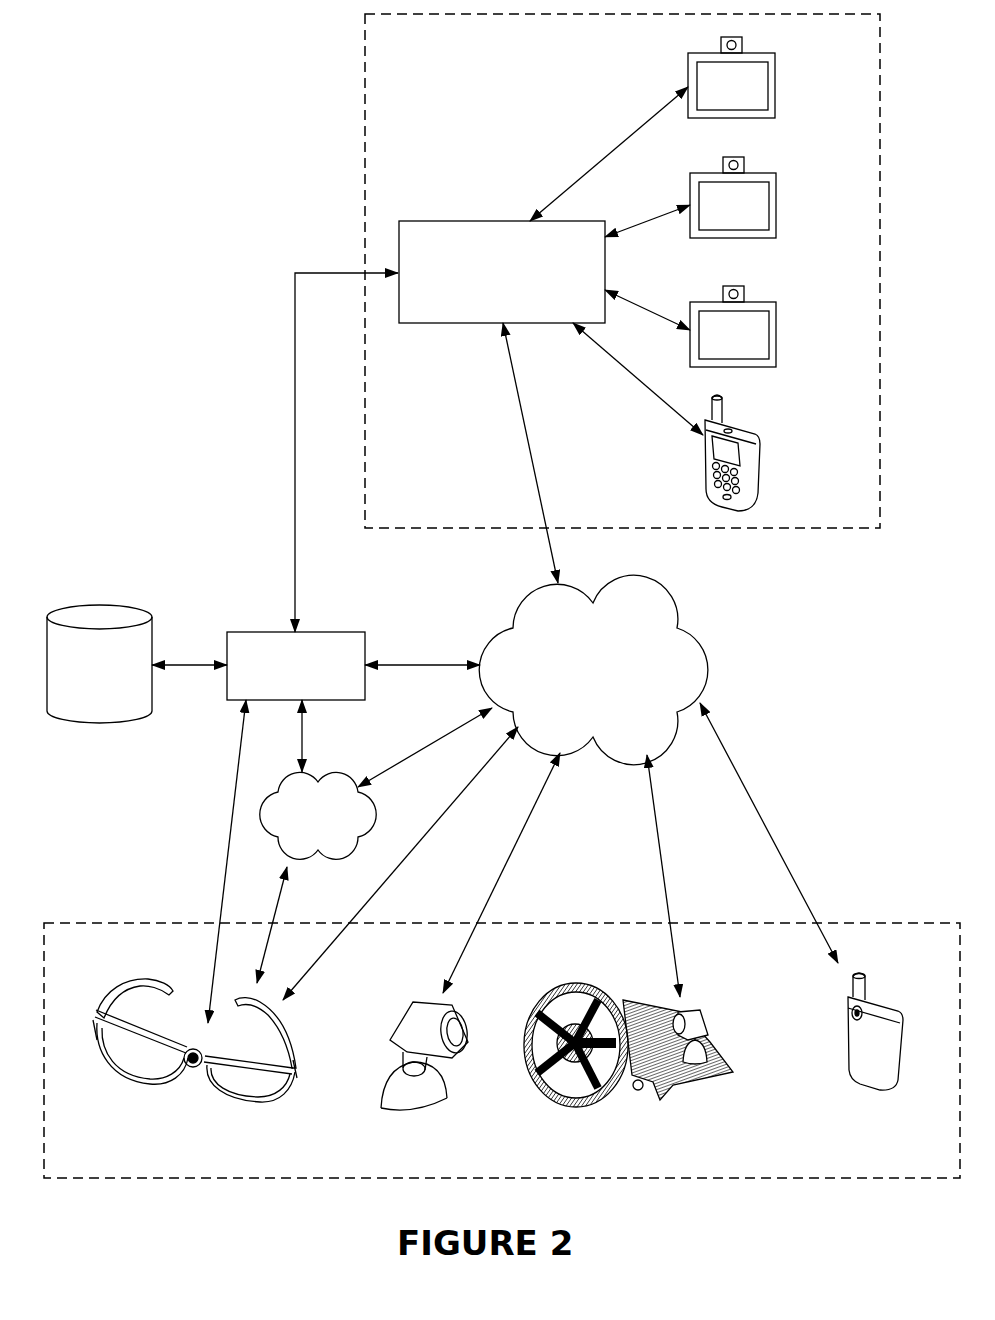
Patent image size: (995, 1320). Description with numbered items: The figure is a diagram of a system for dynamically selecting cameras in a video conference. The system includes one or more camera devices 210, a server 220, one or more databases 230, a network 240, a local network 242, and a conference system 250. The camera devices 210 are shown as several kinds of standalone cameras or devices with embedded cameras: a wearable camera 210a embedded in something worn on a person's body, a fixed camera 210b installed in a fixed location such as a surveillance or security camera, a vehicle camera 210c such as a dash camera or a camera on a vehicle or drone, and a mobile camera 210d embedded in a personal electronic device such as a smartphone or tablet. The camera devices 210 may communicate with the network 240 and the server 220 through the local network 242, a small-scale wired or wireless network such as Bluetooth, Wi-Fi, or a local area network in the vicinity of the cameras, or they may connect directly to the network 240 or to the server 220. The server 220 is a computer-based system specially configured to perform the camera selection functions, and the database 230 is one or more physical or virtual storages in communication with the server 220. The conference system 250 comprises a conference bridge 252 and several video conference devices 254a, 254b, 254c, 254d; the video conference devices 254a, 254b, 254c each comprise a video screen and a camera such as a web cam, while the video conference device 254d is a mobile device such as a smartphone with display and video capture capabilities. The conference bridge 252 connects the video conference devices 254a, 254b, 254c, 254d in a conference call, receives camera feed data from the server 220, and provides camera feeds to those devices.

The camera devices 210 is at (94, 956).
The wearable camera 210a is at (219, 1136).
The fixed camera 210b is at (482, 1147).
The vehicle camera 210c is at (776, 1017).
The mobile camera 210d is at (949, 989).
The server 220 is at (276, 692).
The database 230 is at (79, 696).
The network 240 is at (574, 681).
The local network 242 is at (298, 829).
The conference system 250 is at (406, 46).
The conference bridge 252 is at (482, 300).
The video conference device 254a is at (853, 86).
The video conference device 254b is at (853, 211).
The video conference device 254c is at (853, 342).
The video conference device 254d is at (838, 472).